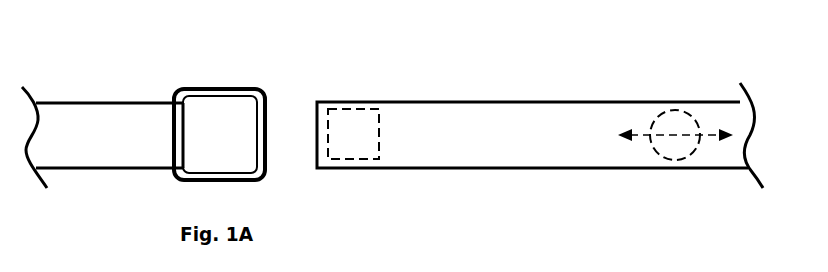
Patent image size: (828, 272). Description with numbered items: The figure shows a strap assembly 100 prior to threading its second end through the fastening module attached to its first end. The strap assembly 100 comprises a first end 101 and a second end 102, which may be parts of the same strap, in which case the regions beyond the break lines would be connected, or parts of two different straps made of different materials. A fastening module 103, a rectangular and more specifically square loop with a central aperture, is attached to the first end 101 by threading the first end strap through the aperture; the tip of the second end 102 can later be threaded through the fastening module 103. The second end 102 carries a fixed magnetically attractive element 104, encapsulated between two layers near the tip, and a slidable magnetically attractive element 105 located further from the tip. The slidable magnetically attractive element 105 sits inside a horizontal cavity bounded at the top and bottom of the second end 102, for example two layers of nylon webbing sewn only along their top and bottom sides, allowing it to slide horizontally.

The strap assembly 100 is at (111, 36).
The first end 101 is at (92, 102).
The second end 102 is at (518, 101).
The fastening module 103 is at (217, 88).
The fixed magnetically attractive element 104 is at (353, 160).
The slidable magnetically attractive element 105 is at (672, 112).